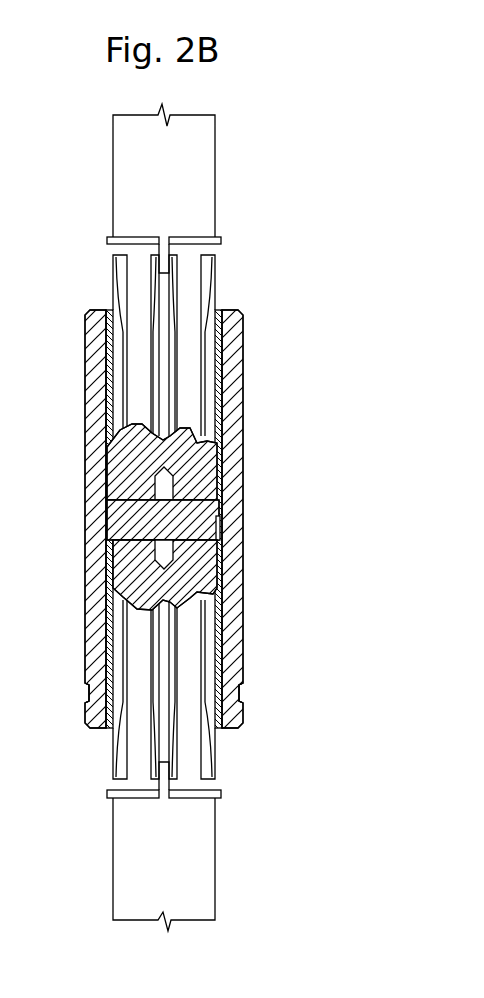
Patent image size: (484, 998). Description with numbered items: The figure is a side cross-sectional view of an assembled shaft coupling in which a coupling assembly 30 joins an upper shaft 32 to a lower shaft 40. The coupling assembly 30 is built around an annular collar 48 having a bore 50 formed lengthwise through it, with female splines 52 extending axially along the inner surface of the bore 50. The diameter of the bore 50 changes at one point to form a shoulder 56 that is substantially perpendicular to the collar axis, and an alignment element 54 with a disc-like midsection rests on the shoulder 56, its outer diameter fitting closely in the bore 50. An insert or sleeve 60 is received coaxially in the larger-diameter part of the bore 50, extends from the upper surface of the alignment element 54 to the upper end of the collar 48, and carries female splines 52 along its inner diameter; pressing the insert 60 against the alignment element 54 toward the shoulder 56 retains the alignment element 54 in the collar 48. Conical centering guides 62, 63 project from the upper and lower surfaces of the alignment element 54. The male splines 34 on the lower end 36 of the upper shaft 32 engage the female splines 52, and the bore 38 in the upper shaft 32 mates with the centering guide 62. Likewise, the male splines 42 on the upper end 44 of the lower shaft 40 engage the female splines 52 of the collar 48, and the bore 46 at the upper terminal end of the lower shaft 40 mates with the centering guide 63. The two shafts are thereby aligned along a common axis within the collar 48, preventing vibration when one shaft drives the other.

The coupling assembly 30 is at (207, 497).
The upper shaft 32 is at (180, 189).
The male splines 34 is at (207, 292).
The lower end 36 is at (153, 270).
The bore 38 is at (206, 460).
The lower shaft 40 is at (182, 866).
The male splines 42 is at (208, 747).
The upper end 44 is at (163, 765).
The bore 46 is at (220, 576).
The annular collar 48 is at (204, 519).
The bore 50 is at (172, 497).
The female splines 52 is at (208, 695).
The alignment element 54 is at (215, 512).
The shoulder 56 is at (222, 524).
The insert 60 is at (218, 347).
The centering guide 62 is at (168, 486).
The centering guide 63 is at (178, 552).